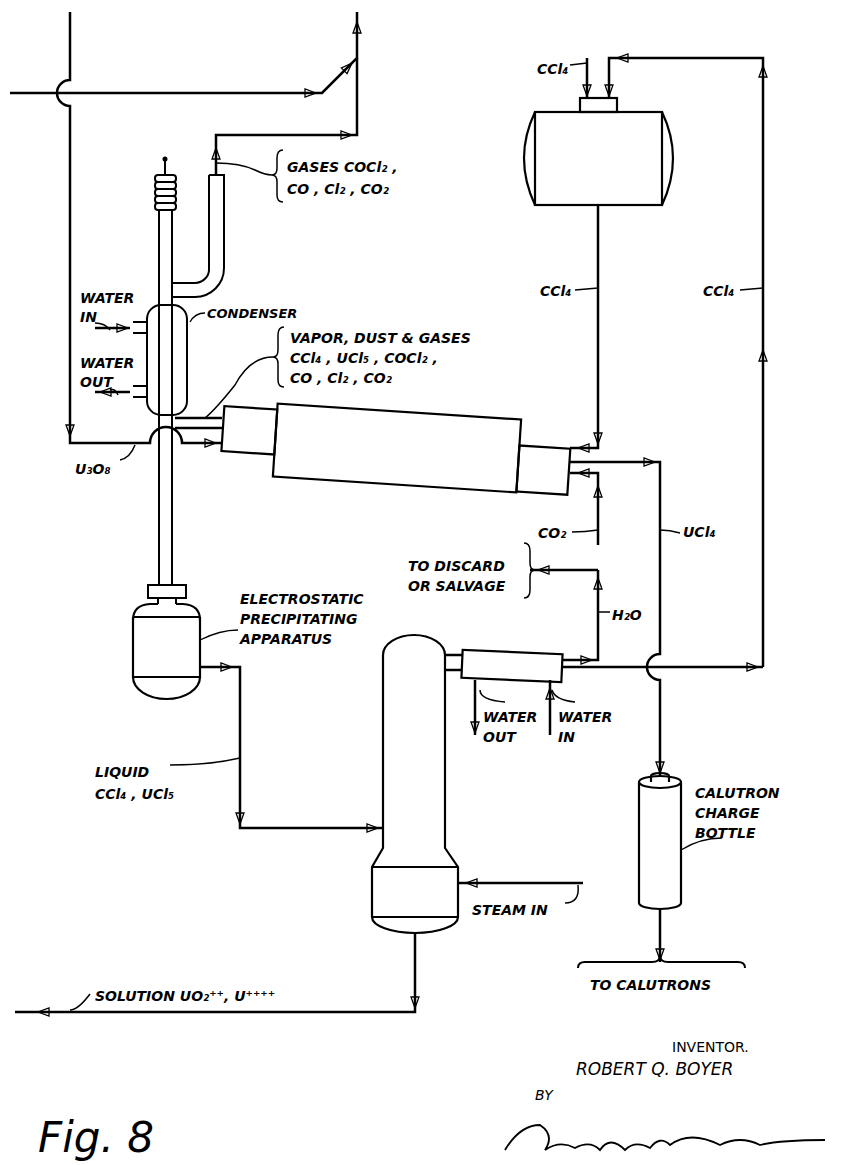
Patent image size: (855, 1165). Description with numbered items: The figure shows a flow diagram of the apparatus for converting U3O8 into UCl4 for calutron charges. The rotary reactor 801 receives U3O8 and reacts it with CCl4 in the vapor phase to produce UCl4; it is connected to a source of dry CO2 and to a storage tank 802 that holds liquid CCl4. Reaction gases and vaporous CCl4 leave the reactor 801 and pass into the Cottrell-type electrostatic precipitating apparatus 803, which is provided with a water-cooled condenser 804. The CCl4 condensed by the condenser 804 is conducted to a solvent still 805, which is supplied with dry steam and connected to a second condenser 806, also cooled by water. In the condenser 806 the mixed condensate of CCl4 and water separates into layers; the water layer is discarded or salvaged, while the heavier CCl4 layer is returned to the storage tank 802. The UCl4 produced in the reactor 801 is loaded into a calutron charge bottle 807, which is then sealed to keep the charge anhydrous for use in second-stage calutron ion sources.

The reactor 801 is at (395, 489).
The storage tank 802 is at (518, 155).
The electrostatic precipitating apparatus 803 is at (133, 640).
The condenser 804 is at (187, 332).
The solvent still 805 is at (446, 803).
The condenser 806 is at (478, 651).
The calutron charge bottle 807 is at (681, 873).